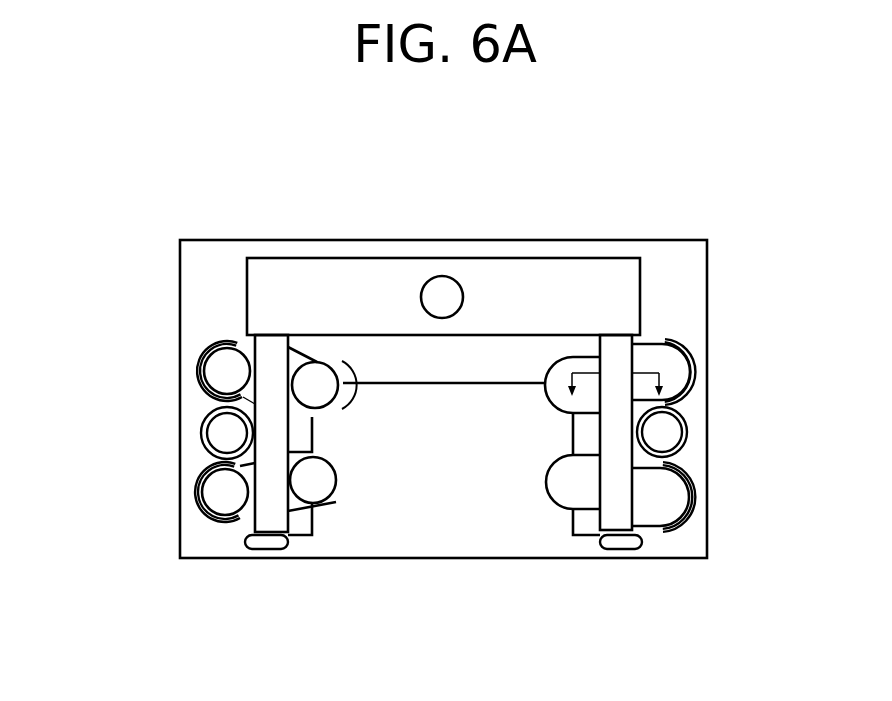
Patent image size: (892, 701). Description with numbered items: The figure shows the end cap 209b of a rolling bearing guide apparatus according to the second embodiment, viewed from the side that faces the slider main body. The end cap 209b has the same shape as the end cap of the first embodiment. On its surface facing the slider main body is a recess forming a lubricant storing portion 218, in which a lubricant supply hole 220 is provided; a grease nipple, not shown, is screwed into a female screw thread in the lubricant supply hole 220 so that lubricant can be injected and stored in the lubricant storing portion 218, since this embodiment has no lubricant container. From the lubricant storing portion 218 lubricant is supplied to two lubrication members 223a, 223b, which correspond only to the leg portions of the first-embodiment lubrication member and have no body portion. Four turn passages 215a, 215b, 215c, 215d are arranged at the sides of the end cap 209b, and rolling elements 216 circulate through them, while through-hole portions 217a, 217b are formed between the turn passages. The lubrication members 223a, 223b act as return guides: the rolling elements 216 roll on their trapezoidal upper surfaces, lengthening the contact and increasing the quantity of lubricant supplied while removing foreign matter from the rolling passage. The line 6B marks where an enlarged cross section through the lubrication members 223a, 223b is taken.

The end cap 209b is at (383, 203).
The lubricant storing portion 218 is at (528, 262).
The lubricant supply hole 220 is at (438, 315).
The lubrication member 223a is at (272, 520).
The lubrication member 223b is at (612, 520).
The turn passage 215a is at (243, 350).
The turn passage 215b is at (663, 360).
The turn passage 215c is at (247, 522).
The turn passage 215d is at (665, 507).
The rolling element 216 is at (215, 367).
The through-hole portion 217a is at (217, 443).
The through-hole portion 217b is at (658, 447).
The section line 6B- 6B is at (563, 385).